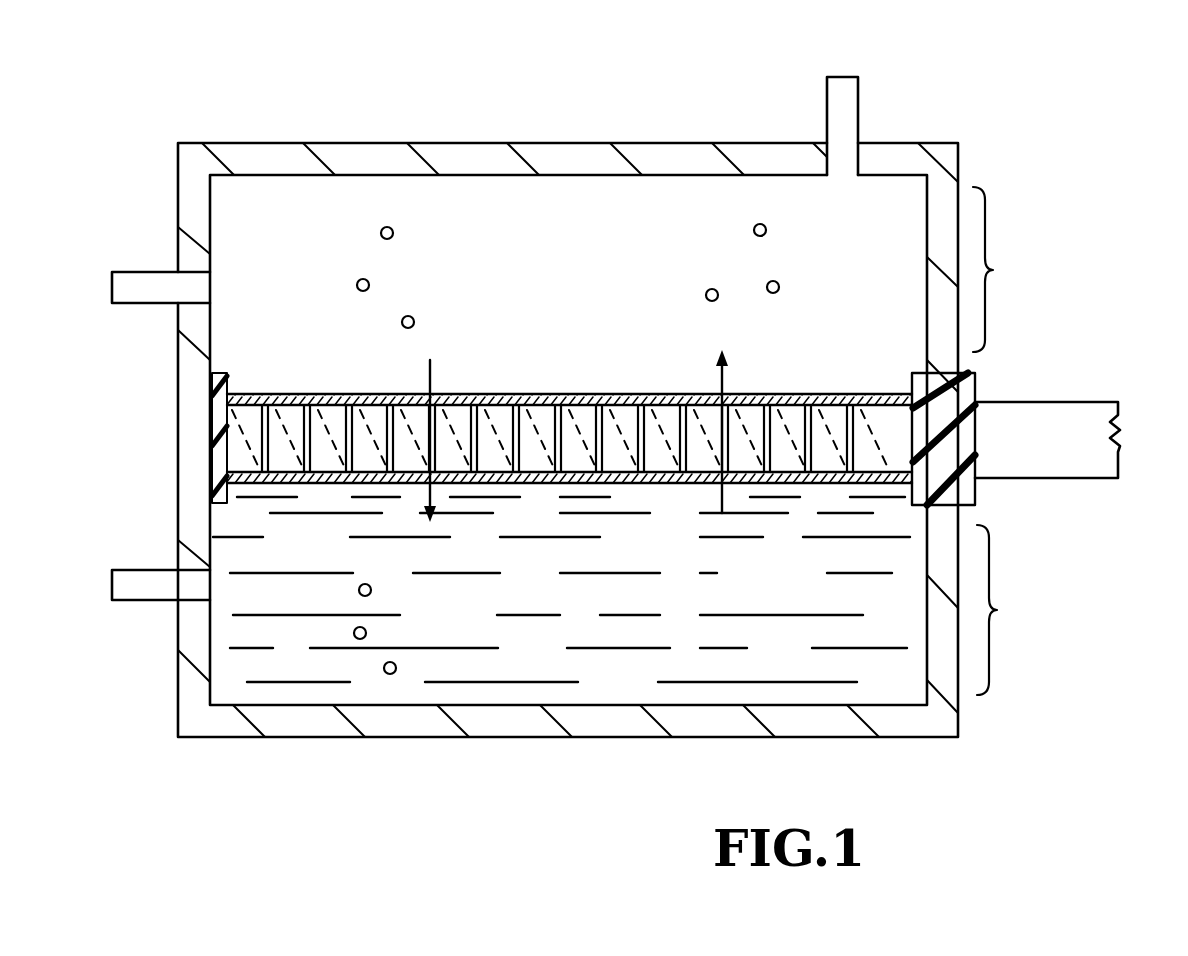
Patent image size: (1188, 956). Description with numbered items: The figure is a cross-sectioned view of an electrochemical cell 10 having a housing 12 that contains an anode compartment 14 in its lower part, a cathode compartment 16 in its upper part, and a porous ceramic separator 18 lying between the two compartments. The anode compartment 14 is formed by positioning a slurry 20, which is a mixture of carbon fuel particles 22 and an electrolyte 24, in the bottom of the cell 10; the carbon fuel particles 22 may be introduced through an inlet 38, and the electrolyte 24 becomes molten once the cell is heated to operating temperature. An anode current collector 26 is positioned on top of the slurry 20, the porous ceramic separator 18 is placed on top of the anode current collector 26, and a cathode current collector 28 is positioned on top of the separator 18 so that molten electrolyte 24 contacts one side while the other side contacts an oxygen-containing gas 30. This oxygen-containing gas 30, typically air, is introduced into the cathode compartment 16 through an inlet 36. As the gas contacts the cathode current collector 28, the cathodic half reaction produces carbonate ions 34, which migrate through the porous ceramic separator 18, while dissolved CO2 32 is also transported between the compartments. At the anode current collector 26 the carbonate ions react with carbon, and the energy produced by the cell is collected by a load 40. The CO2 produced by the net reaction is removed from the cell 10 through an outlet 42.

The electrochemical cell 10 is at (1006, 110).
The housing 12 is at (468, 140).
The anode compartment 14 is at (1012, 610).
The cathode compartment 16 is at (1005, 269).
The porous ceramic separator 18 is at (537, 406).
The slurry 20 is at (797, 595).
The carbon fuel particles 22 is at (372, 590).
The electrolyte 24 is at (598, 650).
The anode current collector 26 is at (330, 484).
The cathode current collector 28 is at (318, 393).
The oxygen-containing gas 30 is at (392, 238).
The dissolved CO2 32 is at (727, 381).
The carbonate ions 34 is at (432, 378).
The inlet 36 is at (152, 270).
The inlet 38 is at (151, 569).
The load 40 is at (1123, 428).
The outlet 42 is at (860, 112).